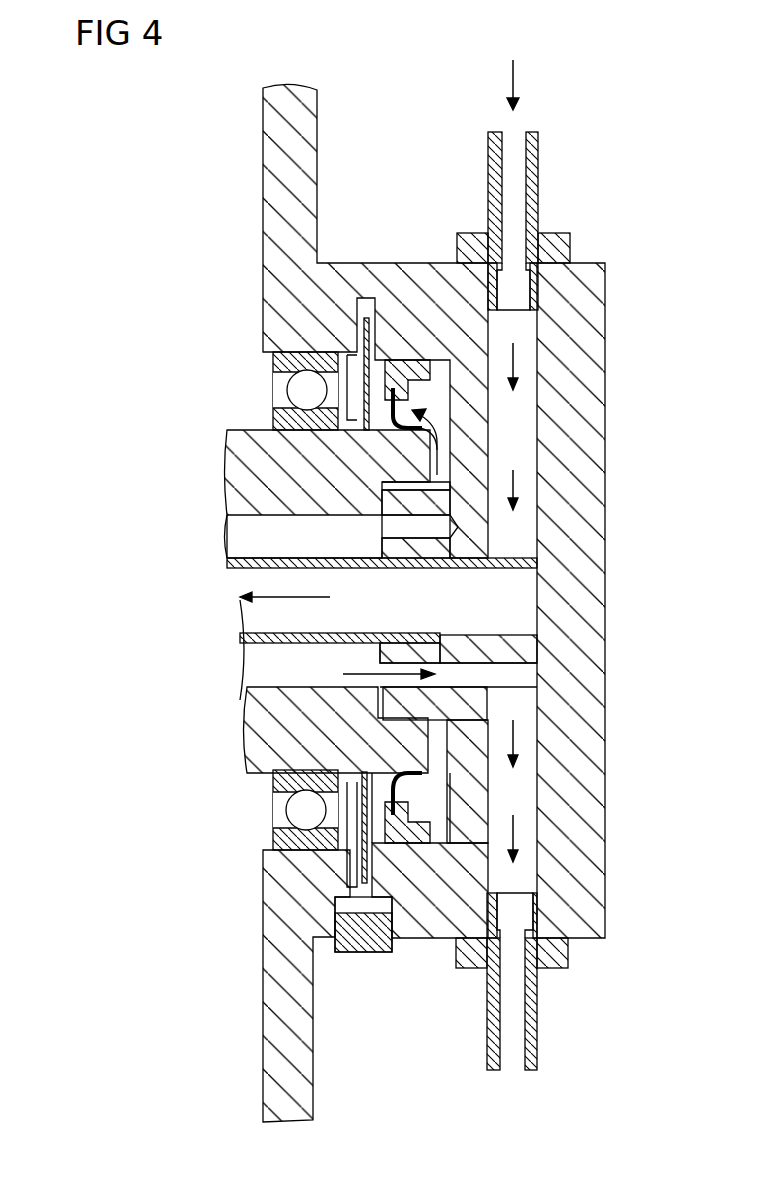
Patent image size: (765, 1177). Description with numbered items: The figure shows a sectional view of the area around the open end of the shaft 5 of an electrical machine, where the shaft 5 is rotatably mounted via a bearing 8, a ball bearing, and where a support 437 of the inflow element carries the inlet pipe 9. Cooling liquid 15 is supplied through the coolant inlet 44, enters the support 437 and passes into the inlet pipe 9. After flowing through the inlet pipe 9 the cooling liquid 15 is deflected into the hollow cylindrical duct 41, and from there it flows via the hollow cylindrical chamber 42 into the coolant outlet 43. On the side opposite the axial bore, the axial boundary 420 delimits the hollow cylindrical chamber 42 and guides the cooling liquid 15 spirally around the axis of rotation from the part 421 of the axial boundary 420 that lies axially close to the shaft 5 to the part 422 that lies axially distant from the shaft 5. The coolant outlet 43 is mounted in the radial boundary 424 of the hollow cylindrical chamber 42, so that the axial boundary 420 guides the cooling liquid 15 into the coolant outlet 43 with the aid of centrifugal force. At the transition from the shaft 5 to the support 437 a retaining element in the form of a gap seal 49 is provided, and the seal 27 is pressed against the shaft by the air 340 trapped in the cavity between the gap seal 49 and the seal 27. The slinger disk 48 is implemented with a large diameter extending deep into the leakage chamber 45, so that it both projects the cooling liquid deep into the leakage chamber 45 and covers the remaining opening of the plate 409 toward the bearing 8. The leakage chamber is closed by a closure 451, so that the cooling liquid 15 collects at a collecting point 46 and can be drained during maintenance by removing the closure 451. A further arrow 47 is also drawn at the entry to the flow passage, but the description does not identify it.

The support 437 is at (278, 157).
The coolant inlet 44 is at (515, 150).
The coolant outlet 43 is at (513, 1057).
The slinger disk 48 is at (368, 328).
The bearing 8 is at (300, 390).
The air 340 is at (440, 438).
The gap seal 49 is at (385, 488).
The hollow cylindrical duct 41 is at (250, 540).
The hollow cylindrical chamber 42 is at (427, 528).
The part of the axial boundary close to the shaft 421 is at (455, 520).
The cooling liquid 15 is at (282, 607).
The flow inlet 47 is at (218, 648).
The inlet pipe 9 is at (262, 640).
The axial boundary 420 is at (540, 662).
The part of the axial boundary distant from the shaft 422 is at (538, 672).
The radial boundary 424 is at (470, 690).
The shaft 5 is at (275, 748).
The seal 27 is at (400, 808).
The plate 409 is at (350, 810).
The collecting point 46 is at (373, 900).
The leakage chamber 45 is at (393, 880).
The closure 451 is at (365, 948).